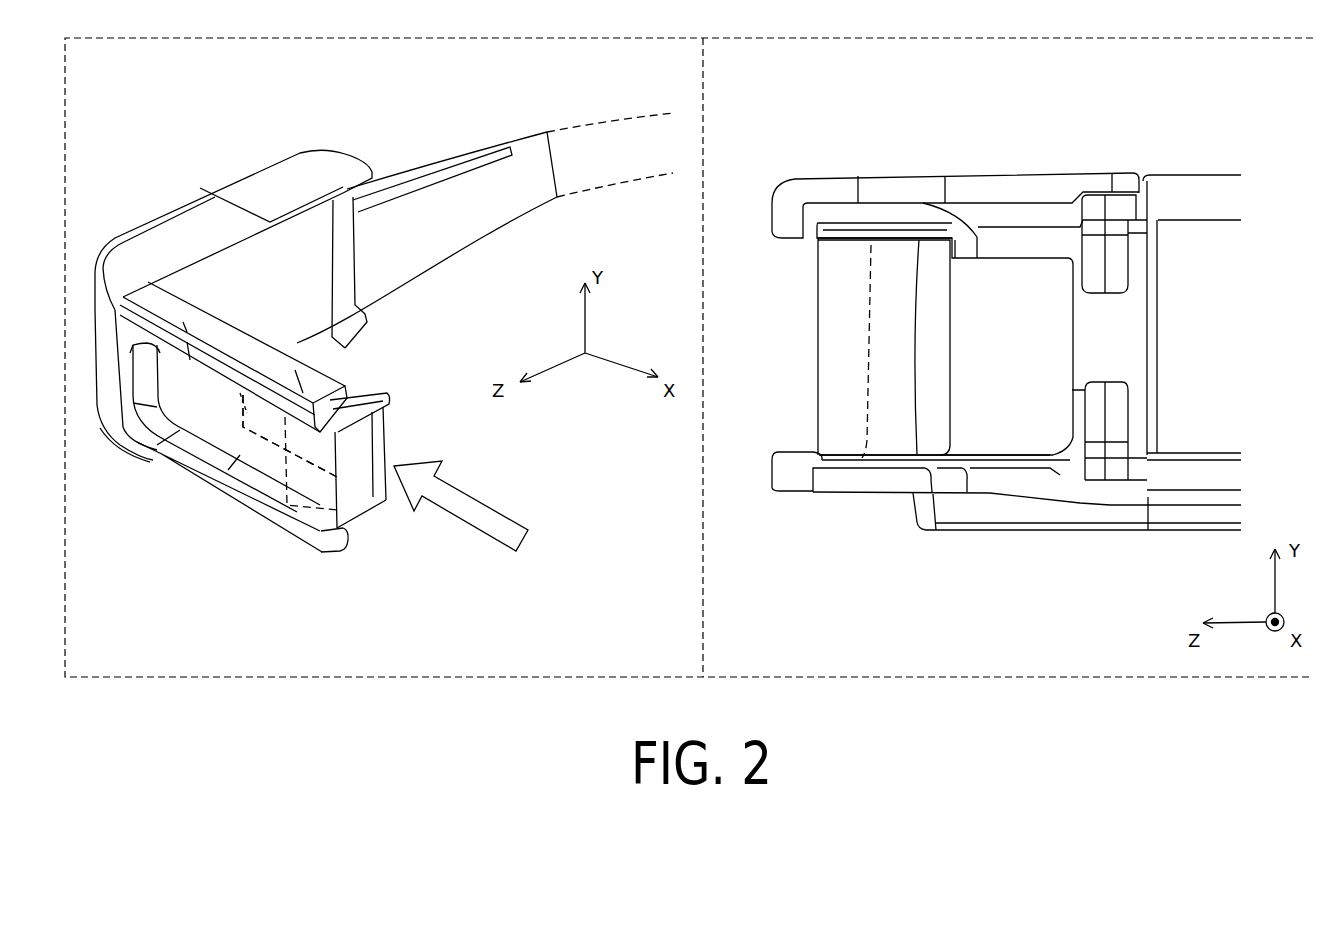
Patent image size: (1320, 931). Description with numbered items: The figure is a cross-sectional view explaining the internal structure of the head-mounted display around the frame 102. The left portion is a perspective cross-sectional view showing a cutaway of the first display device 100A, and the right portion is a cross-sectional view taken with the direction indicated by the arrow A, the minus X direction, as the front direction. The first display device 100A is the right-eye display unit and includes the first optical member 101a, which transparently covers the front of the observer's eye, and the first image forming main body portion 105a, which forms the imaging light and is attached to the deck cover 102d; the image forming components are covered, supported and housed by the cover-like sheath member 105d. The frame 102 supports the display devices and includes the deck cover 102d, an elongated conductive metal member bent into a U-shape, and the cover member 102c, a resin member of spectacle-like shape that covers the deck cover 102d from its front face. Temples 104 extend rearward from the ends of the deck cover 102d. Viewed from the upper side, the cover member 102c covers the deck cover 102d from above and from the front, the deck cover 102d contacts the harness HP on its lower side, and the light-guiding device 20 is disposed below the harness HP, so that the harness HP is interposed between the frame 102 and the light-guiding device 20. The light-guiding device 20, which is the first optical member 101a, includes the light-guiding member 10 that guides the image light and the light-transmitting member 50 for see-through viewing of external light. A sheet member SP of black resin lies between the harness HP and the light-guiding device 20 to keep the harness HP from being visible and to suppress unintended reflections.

The first display device 100A is at (196, 517).
The light-guiding member 10 is at (200, 452).
The light-guiding device 20 is at (247, 468).
The first optical member 101a is at (290, 436).
The light-transmitting member 50 is at (318, 514).
The frame 102 is at (297, 343).
The cover member 102c is at (333, 548).
The deck cover 102d is at (360, 385).
The temple 104 is at (395, 183).
The first image forming main body portion 105a is at (148, 233).
The sheath member 105d is at (186, 205).
The harness HP is at (828, 229).
The sheet member SP is at (864, 240).
The arrow A is at (478, 516).